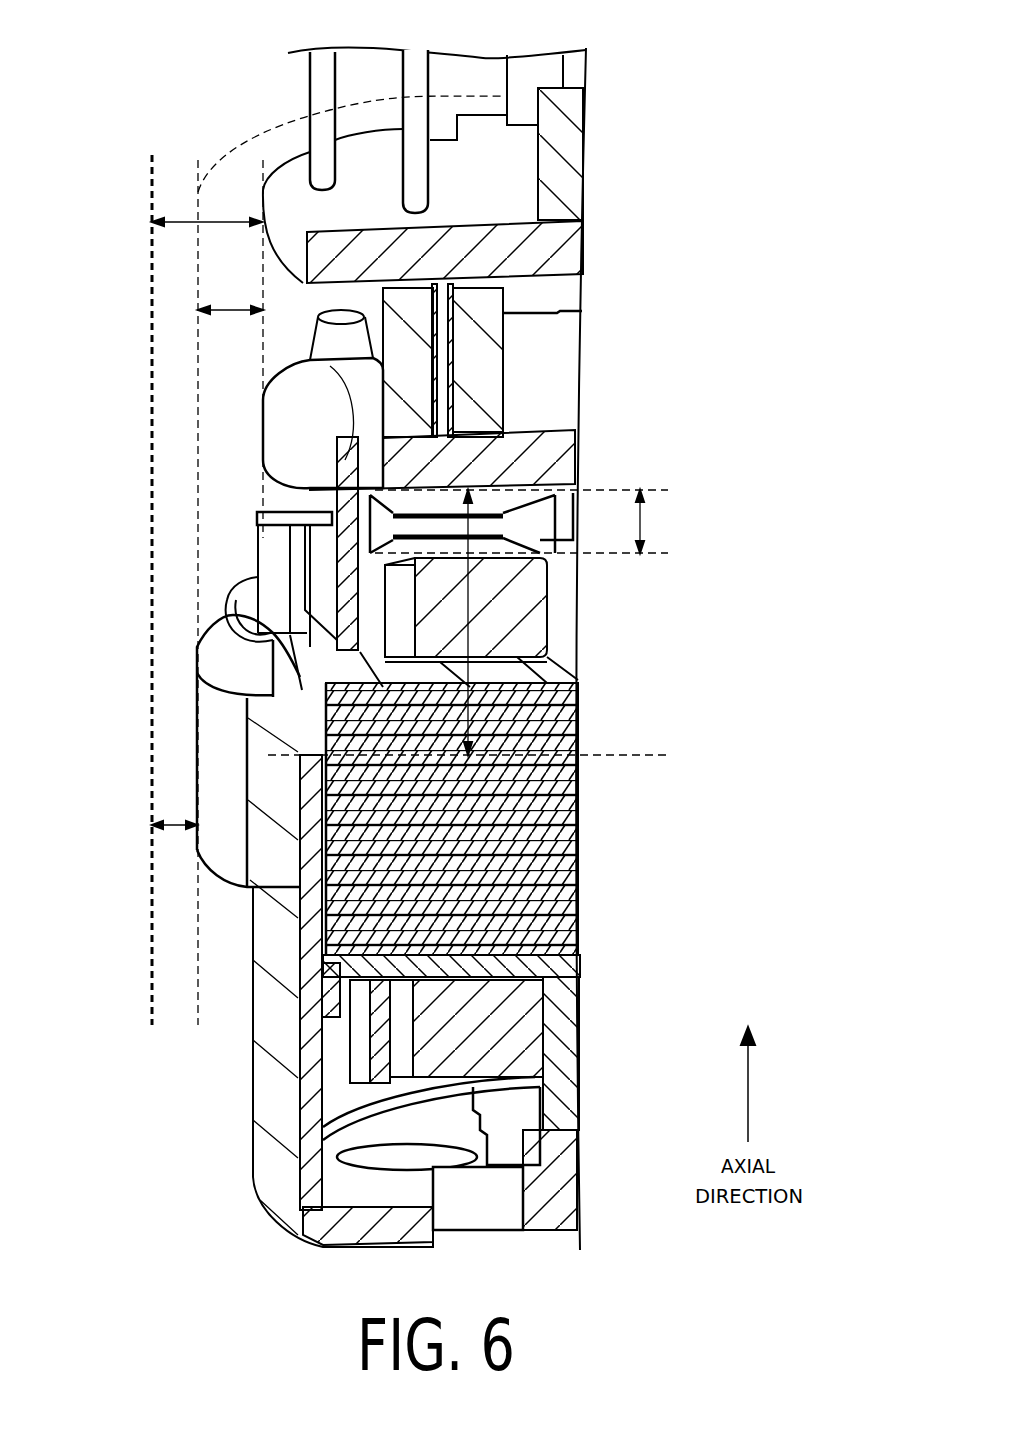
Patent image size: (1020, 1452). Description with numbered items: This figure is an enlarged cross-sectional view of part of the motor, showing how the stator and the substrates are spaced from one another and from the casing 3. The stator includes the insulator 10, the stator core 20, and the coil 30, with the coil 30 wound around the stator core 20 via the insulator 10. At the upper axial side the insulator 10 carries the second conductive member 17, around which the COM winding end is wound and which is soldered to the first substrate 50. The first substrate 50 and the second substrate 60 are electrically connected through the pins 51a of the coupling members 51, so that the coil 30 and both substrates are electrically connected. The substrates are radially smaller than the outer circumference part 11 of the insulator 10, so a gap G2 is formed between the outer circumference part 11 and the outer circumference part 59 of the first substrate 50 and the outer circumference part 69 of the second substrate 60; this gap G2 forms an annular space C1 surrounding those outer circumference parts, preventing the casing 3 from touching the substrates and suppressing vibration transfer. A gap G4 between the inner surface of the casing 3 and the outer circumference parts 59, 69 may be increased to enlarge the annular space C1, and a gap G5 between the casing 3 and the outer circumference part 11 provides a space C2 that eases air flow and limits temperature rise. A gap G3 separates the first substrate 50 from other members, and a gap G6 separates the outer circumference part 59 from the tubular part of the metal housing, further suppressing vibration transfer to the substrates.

The casing 3 is at (152, 190).
The insulator 10 is at (220, 763).
The outer circumference part 11 is at (252, 1009).
The second conductive member 17 is at (330, 588).
The stator core 20 is at (547, 823).
The coil 30 is at (513, 588).
The first substrate 50 is at (500, 460).
The coupling member 51 is at (500, 387).
The pin 51a is at (500, 347).
The outer circumference part 59 is at (273, 445).
The second substrate 60 is at (520, 248).
The outer circumference part 69 is at (273, 243).
The annular space C1 is at (350, 118).
The space C2 is at (153, 660).
The gap G2 is at (230, 299).
The gap G3 is at (529, 521).
The gap G4 is at (207, 211).
The gap G5 is at (172, 827).
The gap G6 is at (475, 720).